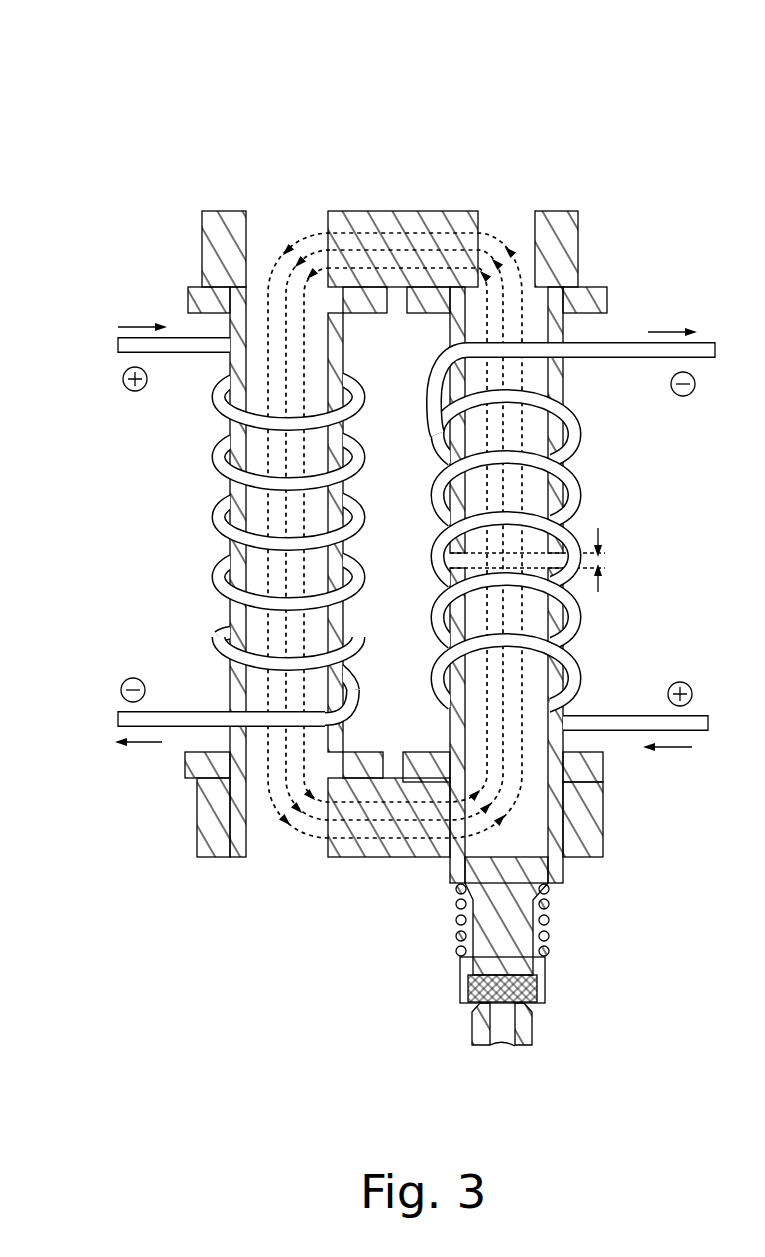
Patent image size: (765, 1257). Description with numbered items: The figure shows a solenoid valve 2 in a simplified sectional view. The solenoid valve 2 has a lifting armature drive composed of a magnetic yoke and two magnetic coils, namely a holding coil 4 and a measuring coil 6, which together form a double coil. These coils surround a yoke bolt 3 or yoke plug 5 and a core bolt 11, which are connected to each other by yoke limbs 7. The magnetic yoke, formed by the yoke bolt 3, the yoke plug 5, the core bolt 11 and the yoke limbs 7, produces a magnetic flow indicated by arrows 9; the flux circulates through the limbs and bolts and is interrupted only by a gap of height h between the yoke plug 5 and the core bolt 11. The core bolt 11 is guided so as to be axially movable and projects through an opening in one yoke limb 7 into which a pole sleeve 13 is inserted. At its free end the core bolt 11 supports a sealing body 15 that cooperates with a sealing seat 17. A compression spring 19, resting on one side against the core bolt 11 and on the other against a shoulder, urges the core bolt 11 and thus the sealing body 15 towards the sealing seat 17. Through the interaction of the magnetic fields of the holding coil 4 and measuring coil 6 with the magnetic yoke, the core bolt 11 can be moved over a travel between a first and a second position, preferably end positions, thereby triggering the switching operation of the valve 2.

The solenoid valve 2 is at (609, 106).
The yoke bolt 3 is at (265, 442).
The holding coil 4 is at (572, 485).
The yoke plug 5 is at (538, 440).
The measuring coil 6 is at (240, 518).
The yoke limbs 7 is at (428, 220).
The arrows 9 is at (367, 206).
The core bolt 11 is at (548, 628).
The pole sleeve 13 is at (560, 818).
The sealing body 15 is at (525, 985).
The sealing seat 17 is at (520, 1025).
The compression spring 19 is at (550, 915).
The gap height h is at (598, 562).